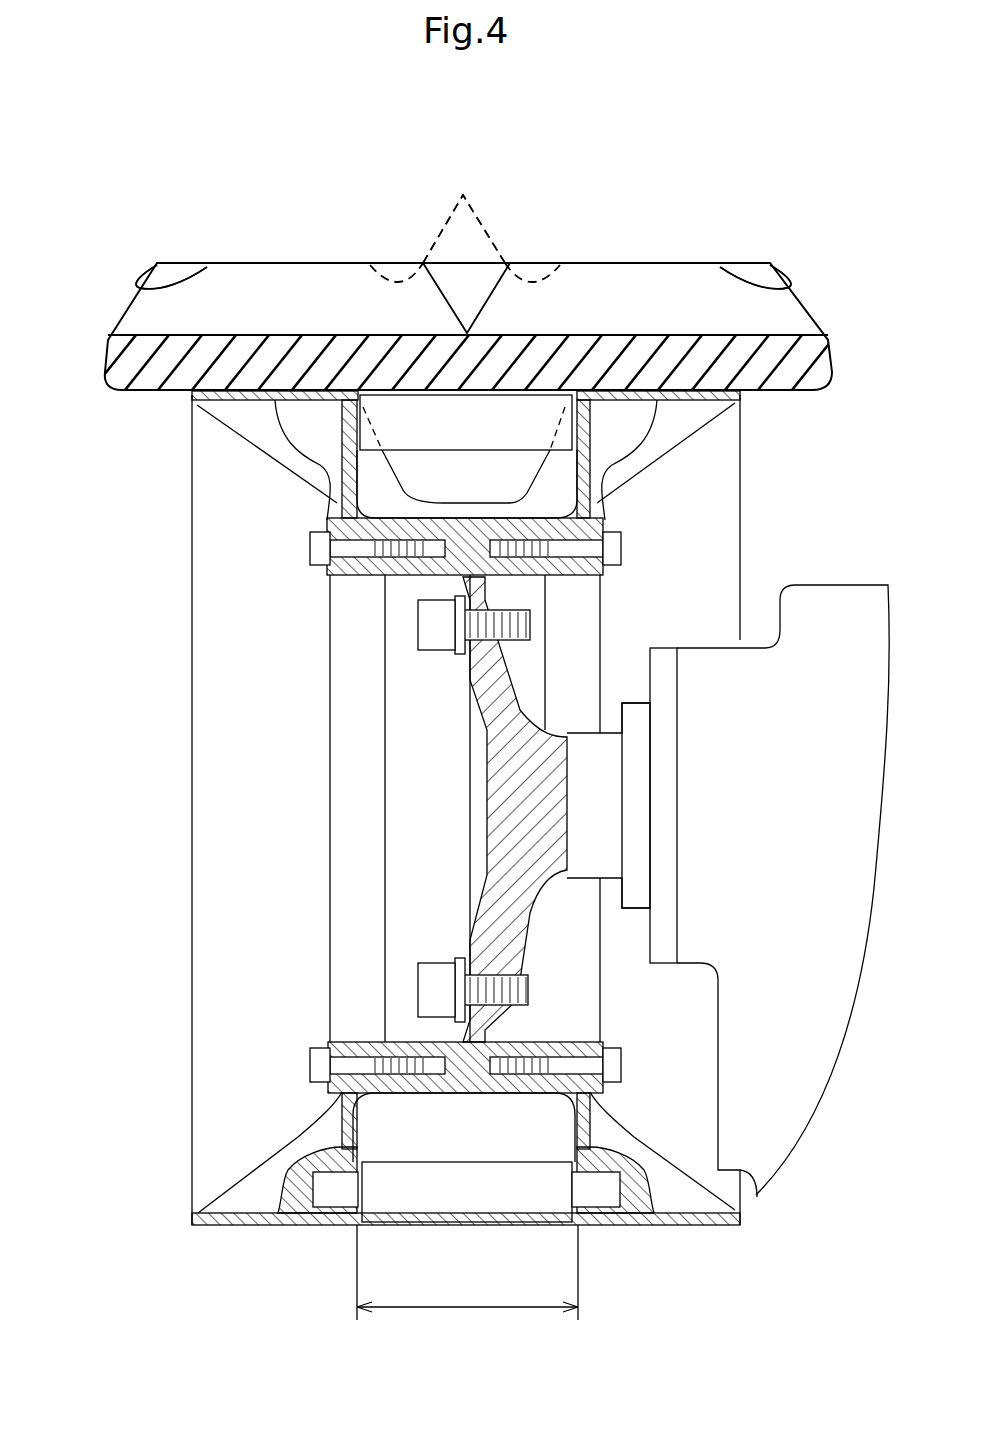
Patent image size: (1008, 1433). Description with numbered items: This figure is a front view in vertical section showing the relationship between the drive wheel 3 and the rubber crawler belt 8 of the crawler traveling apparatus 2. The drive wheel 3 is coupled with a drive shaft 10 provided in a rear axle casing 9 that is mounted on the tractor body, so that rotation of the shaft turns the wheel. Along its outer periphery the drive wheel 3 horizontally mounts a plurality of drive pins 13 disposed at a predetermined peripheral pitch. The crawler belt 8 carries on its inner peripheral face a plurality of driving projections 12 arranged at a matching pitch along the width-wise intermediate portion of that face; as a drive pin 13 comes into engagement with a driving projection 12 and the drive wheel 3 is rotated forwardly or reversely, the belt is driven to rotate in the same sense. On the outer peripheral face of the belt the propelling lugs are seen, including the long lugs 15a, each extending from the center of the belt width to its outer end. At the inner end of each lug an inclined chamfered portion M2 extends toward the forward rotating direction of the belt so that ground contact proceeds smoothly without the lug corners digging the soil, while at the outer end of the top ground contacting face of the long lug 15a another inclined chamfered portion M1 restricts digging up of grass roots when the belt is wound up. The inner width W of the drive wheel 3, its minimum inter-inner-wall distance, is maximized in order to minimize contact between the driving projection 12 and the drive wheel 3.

The crawler traveling apparatus 2 is at (143, 178).
The drive wheel 3 is at (195, 803).
The rubber crawler belt 8 is at (160, 385).
The rear axle casing 9 is at (843, 585).
The drive shaft 10 is at (600, 815).
The driving projection 12 is at (403, 468).
The drive pin 13 is at (442, 445).
The long lug 15a is at (283, 265).
The inclined chamfered portion M1 is at (153, 277).
The inclined chamfered portion M2 is at (464, 213).
The inner width W is at (467, 1284).